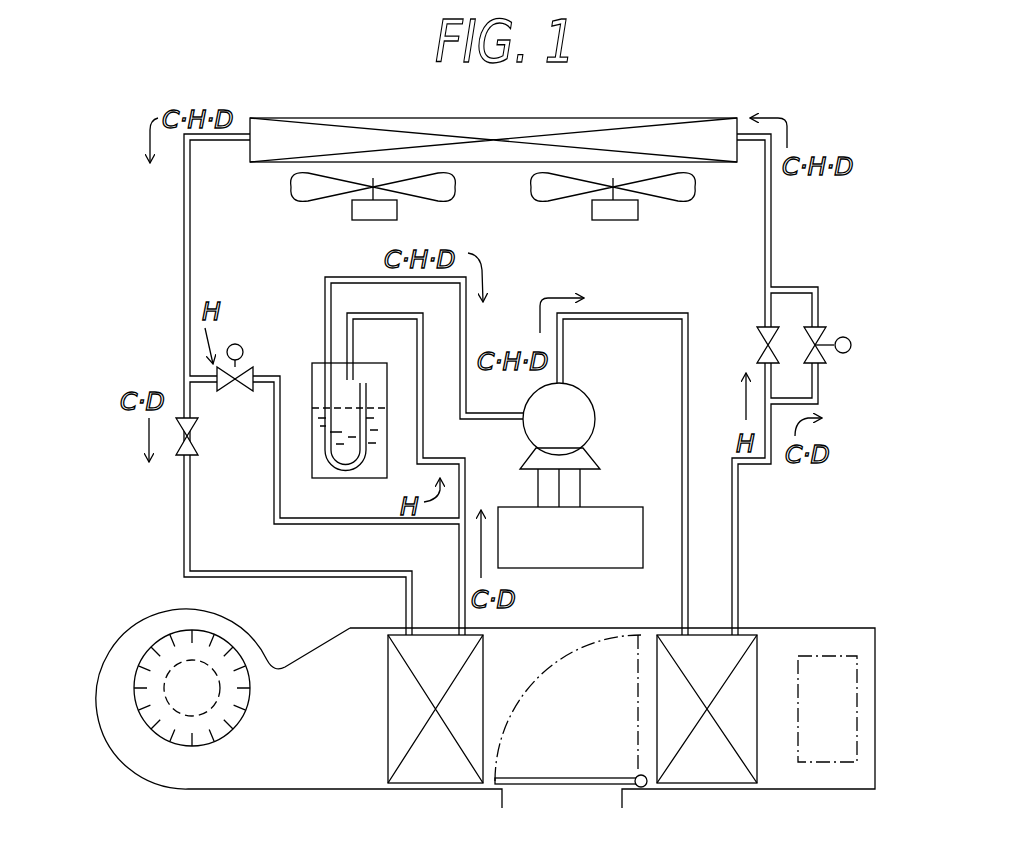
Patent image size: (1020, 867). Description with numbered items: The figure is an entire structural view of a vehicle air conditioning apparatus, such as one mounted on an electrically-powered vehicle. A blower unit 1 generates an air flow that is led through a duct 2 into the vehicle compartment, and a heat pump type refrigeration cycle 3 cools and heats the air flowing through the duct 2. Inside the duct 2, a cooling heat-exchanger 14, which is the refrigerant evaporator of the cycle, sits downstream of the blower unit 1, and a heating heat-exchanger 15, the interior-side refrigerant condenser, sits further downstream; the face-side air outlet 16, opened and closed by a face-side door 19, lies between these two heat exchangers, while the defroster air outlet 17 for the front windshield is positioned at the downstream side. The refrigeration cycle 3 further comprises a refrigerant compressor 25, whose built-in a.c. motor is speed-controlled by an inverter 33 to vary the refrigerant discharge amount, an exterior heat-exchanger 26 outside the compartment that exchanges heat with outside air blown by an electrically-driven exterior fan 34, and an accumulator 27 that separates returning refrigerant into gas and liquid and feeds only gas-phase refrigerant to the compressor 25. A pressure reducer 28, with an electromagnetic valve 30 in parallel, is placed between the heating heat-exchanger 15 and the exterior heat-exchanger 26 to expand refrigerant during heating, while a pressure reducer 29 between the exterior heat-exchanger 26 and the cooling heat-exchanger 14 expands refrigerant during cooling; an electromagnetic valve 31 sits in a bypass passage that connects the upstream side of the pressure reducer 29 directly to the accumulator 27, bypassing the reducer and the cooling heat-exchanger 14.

The blower unit 1 is at (116, 626).
The duct 2 is at (297, 791).
The heat pump type refrigeration cycle 3 is at (799, 121).
The cooling heat-exchanger 14 is at (432, 790).
The heating heat-exchanger 15 is at (710, 790).
The face-side air outlet 16 is at (515, 795).
The defroster air outlet 17 is at (858, 712).
The face-side door 19 is at (595, 790).
The refrigerant compressor 25 is at (597, 413).
The exterior heat-exchanger 26 is at (490, 118).
The accumulator 27 is at (338, 478).
The pressure reducer 28 is at (760, 328).
The pressure reducer 29 is at (193, 450).
The electromagnetic valve 30 is at (822, 328).
The electromagnetic valve 31 is at (228, 392).
The inverter 33 is at (645, 497).
The exterior fan 34 is at (446, 196).